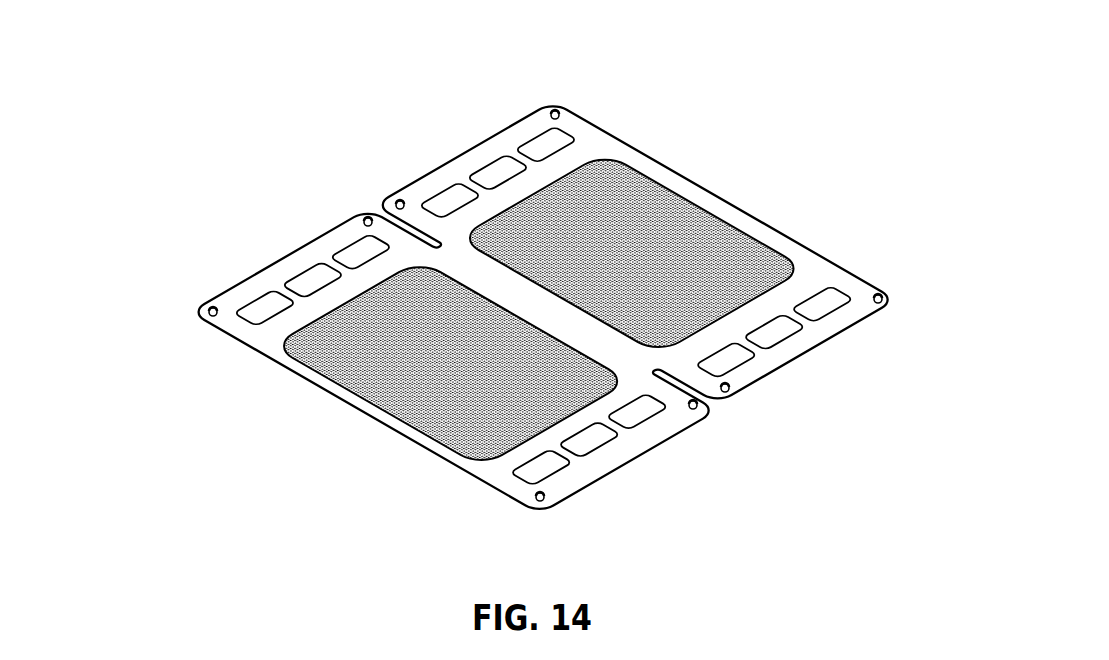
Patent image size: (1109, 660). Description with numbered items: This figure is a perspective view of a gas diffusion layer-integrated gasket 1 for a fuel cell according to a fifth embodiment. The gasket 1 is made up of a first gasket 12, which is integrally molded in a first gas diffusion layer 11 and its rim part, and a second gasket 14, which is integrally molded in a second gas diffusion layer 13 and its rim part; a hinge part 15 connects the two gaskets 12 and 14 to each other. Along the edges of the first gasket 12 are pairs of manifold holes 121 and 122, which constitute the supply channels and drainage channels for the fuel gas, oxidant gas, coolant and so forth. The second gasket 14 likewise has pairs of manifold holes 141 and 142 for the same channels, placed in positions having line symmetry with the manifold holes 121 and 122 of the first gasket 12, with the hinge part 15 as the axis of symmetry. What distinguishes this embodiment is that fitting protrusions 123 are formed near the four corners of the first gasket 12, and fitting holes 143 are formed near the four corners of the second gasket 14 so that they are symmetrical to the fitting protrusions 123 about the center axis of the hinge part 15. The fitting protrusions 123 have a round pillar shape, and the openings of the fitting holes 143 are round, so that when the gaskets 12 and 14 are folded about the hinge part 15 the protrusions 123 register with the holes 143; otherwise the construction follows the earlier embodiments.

The gas diffusion layer-integrated gasket 1 is at (706, 124).
The first gas diffusion layer 11 is at (433, 383).
The first gasket 12 is at (470, 350).
The manifold holes 121 is at (310, 280).
The manifold holes 122 is at (593, 446).
The fitting protrusions 123 is at (211, 308).
The second gas diffusion layer 13 is at (682, 232).
The second gasket 14 is at (640, 237).
The manifold holes 141 is at (495, 170).
The manifold holes 142 is at (777, 335).
The fitting holes 143 is at (399, 200).
The hinge part 15 is at (567, 318).